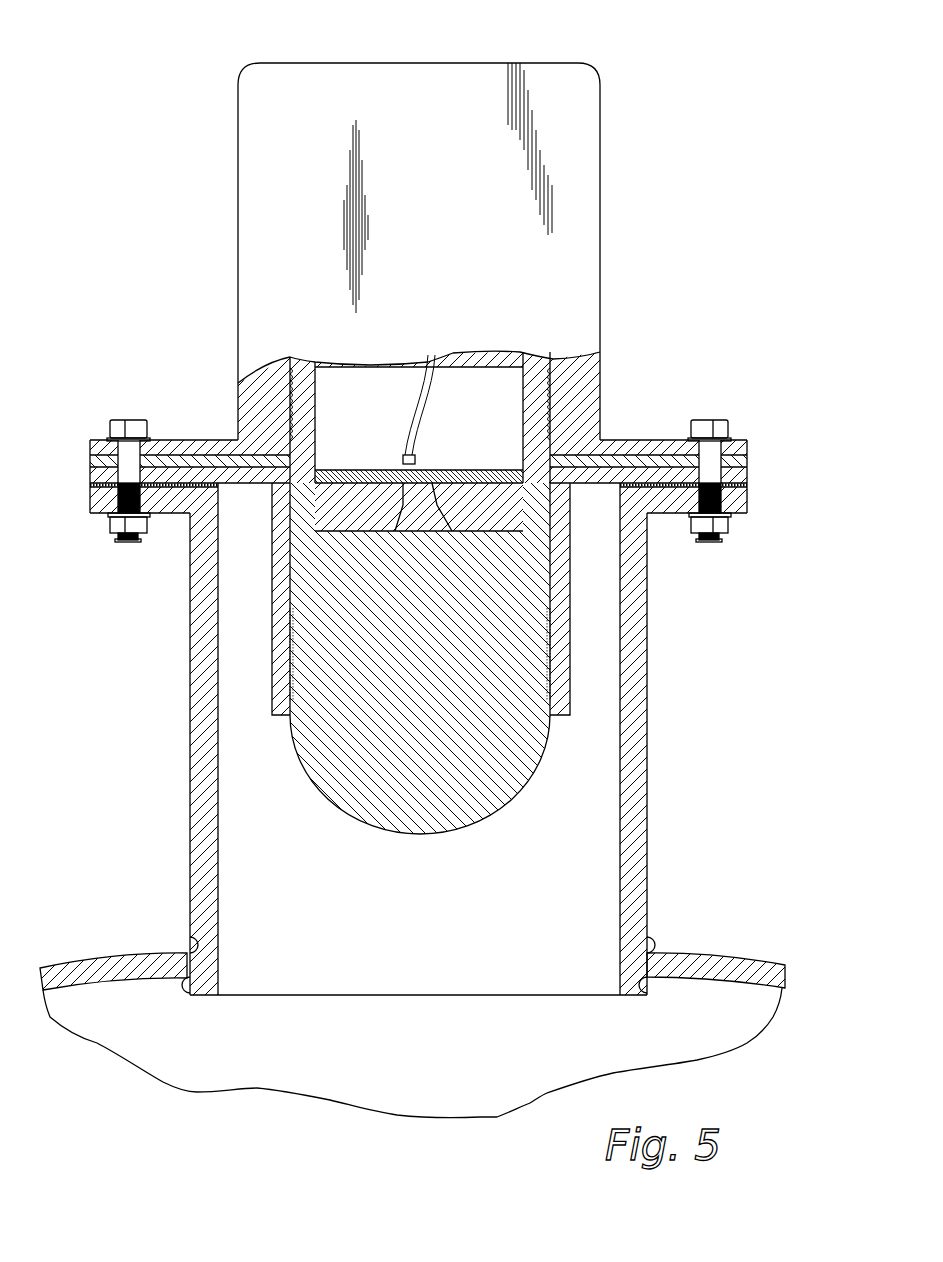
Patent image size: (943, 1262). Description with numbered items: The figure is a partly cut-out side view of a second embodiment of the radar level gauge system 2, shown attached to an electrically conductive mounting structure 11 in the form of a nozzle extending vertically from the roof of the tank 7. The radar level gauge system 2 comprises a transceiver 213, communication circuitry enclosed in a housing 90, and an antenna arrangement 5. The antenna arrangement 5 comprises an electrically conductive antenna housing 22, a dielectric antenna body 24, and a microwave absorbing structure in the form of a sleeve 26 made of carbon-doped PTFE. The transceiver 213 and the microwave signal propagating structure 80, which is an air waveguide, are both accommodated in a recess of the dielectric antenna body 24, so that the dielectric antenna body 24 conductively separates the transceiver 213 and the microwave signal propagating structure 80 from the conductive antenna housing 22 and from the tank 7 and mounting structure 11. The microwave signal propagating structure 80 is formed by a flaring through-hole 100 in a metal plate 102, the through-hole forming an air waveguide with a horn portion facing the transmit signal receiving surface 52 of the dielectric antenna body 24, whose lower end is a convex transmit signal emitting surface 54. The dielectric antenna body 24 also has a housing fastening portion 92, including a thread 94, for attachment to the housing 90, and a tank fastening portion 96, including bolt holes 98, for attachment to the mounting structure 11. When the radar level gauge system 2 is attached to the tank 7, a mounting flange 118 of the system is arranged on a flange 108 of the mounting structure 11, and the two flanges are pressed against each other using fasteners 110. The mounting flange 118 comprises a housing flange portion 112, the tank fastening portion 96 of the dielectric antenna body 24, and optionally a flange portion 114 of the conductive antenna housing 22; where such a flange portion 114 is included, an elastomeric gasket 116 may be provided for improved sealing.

The radar level gauge system 2 is at (178, 72).
The antenna arrangement 5 is at (279, 838).
The tank 7 is at (722, 960).
The mounting structure 11 is at (619, 881).
The antenna housing 22 is at (417, 517).
The dielectric antenna body 24 is at (355, 793).
The sleeve 26 is at (570, 633).
The transmit signal receiving surface 52 is at (392, 535).
The convex transmit signal emitting surface 54 is at (415, 835).
The microwave signal propagating structure 80 is at (437, 542).
The housing 90 is at (238, 206).
The housing fastening portion 92 is at (497, 397).
The thread 94 is at (545, 412).
The tank fastening portion 96 is at (608, 462).
The bolt holes 98 is at (735, 447).
The flaring through-hole 100 is at (273, 647).
The metal plate 102 is at (485, 513).
The flange 108 is at (734, 524).
The fasteners 110 is at (730, 420).
The housing flange portion 112 is at (635, 440).
The flange portion 114 is at (750, 470).
The elastomeric gasket 116 is at (667, 488).
The mounting flange 118 is at (655, 427).
The transceiver 213 is at (378, 478).